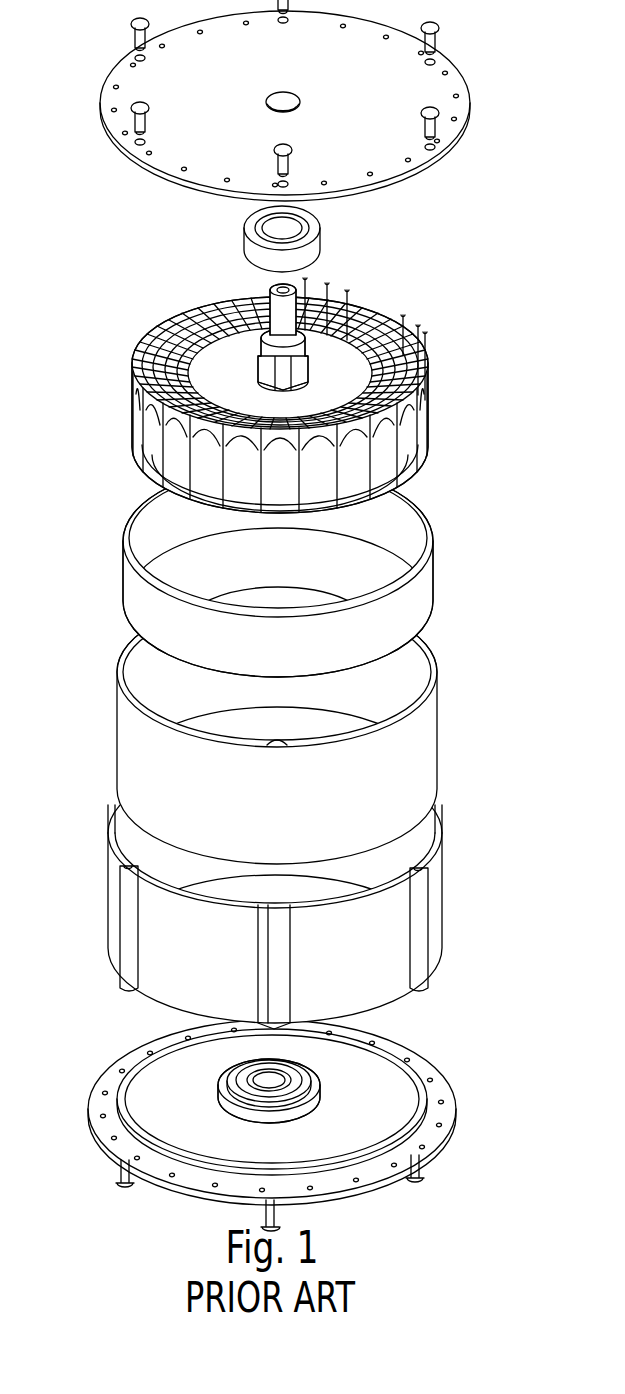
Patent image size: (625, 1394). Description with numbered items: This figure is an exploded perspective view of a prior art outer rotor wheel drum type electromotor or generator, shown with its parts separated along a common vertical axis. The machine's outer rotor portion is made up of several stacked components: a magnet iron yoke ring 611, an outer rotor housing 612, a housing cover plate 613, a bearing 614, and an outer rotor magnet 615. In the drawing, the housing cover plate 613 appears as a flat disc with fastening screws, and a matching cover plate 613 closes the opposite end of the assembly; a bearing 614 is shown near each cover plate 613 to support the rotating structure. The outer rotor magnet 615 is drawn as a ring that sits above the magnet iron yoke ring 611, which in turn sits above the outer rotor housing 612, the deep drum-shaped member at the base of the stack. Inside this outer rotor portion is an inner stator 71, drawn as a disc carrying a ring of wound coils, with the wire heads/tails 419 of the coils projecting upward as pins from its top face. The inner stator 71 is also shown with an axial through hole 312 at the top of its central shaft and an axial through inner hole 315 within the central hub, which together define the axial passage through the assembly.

The housing cover plate 613 is at (440, 85).
The bearing 614 is at (313, 244).
The axial through hole 312 is at (290, 288).
The wire heads/tails of coils 419 is at (349, 292).
The axial through inner hole 315 is at (283, 372).
The inner stator 71 is at (333, 393).
The outer rotor magnet 615 is at (415, 592).
The magnet iron yoke ring 611 is at (413, 723).
The outer rotor housing 612 is at (430, 895).